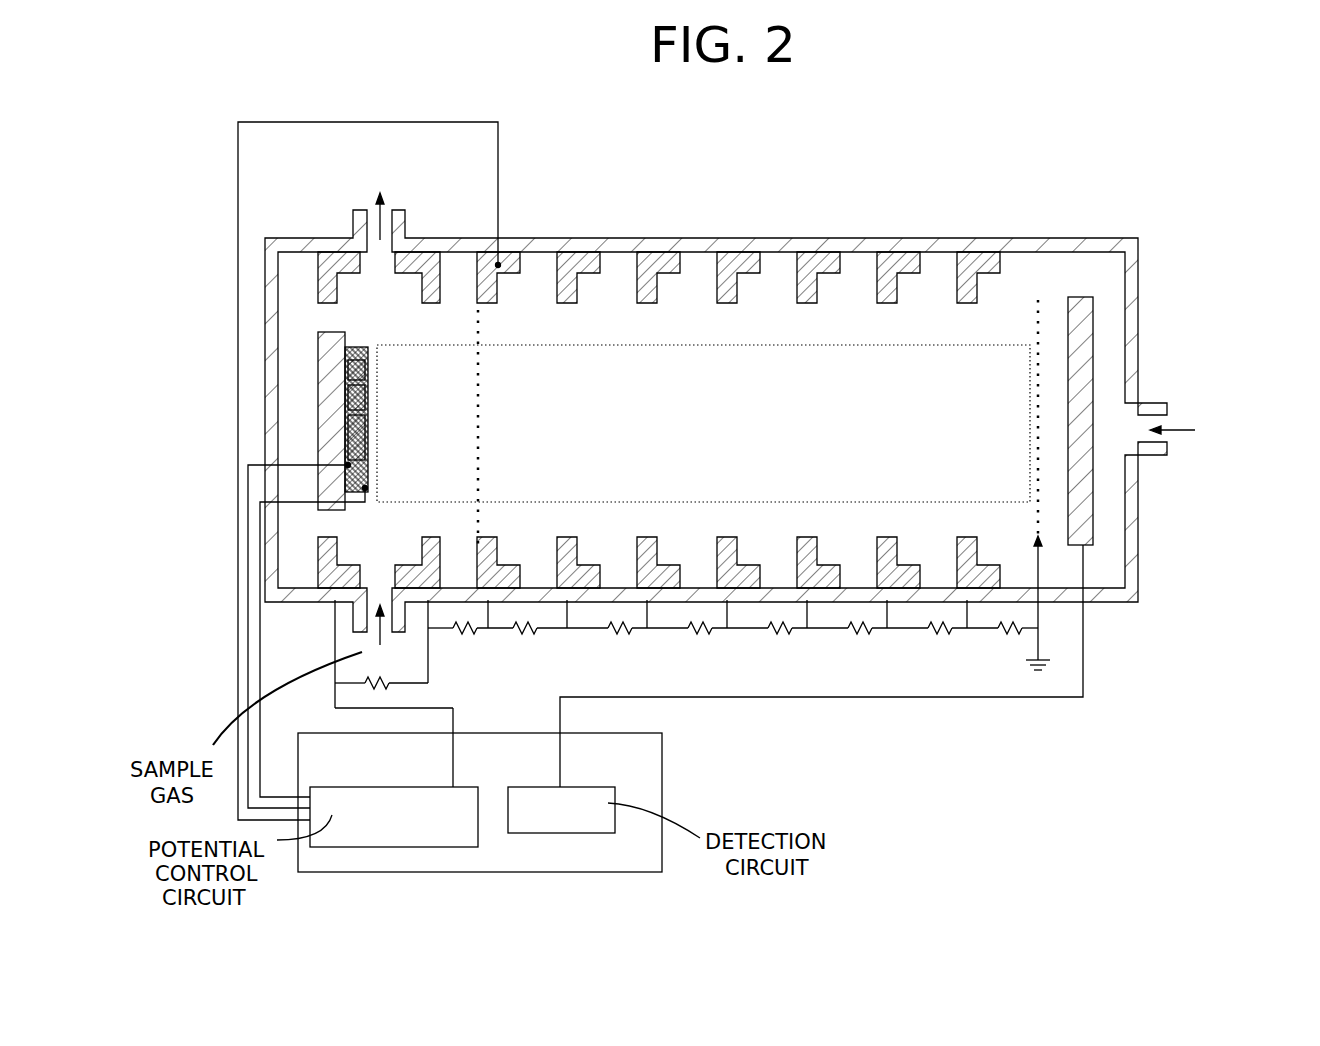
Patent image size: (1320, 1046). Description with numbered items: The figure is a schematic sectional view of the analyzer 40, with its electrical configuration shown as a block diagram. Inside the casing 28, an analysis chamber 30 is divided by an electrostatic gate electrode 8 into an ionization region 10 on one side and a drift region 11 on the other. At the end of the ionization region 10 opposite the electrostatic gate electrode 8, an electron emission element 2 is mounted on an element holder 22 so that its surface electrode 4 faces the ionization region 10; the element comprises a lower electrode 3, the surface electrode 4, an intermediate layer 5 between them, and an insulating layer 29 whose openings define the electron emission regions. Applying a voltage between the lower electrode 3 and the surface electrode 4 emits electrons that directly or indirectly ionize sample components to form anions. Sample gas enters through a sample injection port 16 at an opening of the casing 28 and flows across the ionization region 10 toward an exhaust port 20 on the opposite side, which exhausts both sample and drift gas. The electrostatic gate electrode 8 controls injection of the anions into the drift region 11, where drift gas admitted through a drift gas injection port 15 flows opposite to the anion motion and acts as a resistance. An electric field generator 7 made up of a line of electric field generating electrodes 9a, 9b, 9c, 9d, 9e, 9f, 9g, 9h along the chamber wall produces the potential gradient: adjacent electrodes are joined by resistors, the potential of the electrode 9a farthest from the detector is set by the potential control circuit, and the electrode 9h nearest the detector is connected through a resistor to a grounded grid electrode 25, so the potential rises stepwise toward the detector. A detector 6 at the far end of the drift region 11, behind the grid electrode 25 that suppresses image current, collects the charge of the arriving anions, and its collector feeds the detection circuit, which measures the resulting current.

The electron emission element 2 is at (263, 397).
The lower electrode 3 is at (360, 372).
The surface electrode 4 is at (360, 437).
The intermediate layer 5 is at (355, 392).
The detector 6 is at (1080, 350).
The electric field generator 7 is at (653, 483).
The electrostatic gate electrode 8 is at (500, 262).
The electric field generating electrode 9a is at (335, 257).
The electric field generating electrode 9b is at (430, 256).
The electric field generating electrode 9c is at (580, 250).
The electric field generating electrode 9d is at (660, 250).
The electric field generating electrode 9e is at (740, 250).
The electric field generating electrode 9f is at (812, 250).
The electric field generating electrode 9g is at (900, 250).
The electric field generating electrode 9h is at (985, 250).
The ionization region 10 is at (448, 345).
The drift region 11 is at (688, 343).
The drift gas injection port 15 is at (1138, 433).
The sample injection port 16 is at (360, 615).
The exhaust port 20 is at (363, 212).
The element holder 22 is at (318, 332).
The grid electrode 25 is at (1038, 305).
The casing 28 is at (858, 245).
The insulating layer 29 is at (345, 352).
The analysis chamber 30 is at (303, 305).
The analyzer 40 is at (1075, 182).